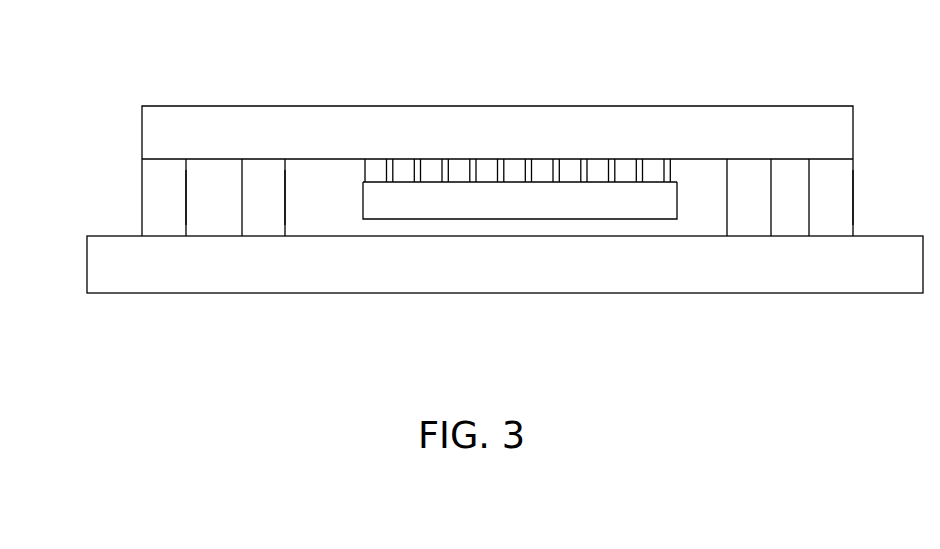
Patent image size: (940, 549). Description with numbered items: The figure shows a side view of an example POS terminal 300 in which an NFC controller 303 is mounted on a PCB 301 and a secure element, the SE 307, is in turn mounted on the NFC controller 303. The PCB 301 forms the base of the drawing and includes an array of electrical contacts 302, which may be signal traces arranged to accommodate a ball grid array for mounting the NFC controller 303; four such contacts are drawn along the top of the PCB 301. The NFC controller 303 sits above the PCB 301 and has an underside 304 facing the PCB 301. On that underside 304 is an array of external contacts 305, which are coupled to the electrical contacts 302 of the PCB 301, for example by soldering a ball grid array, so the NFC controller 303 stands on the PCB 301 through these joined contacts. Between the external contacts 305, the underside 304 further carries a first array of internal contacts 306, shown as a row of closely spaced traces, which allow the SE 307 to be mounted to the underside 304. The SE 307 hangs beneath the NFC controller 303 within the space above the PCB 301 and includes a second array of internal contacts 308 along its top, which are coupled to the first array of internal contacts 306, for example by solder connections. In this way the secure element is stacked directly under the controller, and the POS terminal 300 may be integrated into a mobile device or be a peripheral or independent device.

The POS terminal 300 is at (97, 110).
The PCB 301 is at (505, 264).
The array of electrical contacts 302 is at (163, 238).
The NFC controller 303 is at (497, 171).
The underside 304 is at (316, 161).
The array of external contacts 305 is at (188, 190).
The first array of internal contacts 306 is at (486, 158).
The SE 307 is at (520, 200).
The second array of internal contacts 308 is at (546, 184).